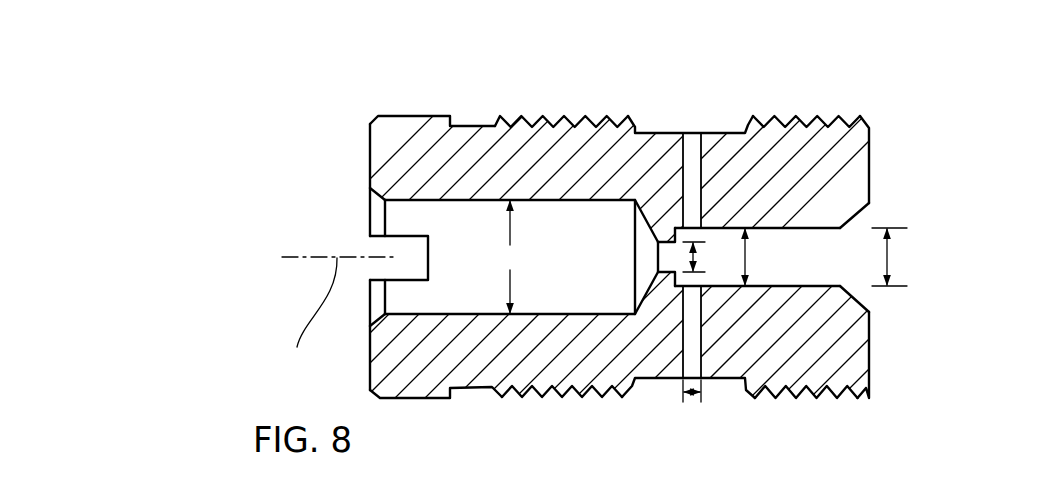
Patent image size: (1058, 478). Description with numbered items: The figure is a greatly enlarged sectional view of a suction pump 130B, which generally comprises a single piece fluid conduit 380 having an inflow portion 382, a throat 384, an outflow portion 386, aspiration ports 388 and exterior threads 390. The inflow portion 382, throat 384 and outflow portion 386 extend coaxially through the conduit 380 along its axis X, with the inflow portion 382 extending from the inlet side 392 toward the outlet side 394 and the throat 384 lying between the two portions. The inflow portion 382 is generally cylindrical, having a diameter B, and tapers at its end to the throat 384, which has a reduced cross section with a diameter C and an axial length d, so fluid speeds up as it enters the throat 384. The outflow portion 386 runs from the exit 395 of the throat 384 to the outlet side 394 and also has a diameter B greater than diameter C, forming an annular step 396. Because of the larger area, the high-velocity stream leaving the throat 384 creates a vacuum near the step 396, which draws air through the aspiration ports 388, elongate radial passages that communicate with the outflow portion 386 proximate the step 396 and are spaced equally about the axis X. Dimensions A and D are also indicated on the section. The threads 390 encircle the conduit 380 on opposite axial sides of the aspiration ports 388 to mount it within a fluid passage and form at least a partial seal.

The suction pump 130B is at (243, 178).
The single piece fluid conduit 380 is at (364, 160).
The inflow portion 382 is at (405, 200).
The throat 384 is at (662, 240).
The outflow portion 386 is at (797, 248).
The aspiration ports 388 is at (699, 168).
The exterior threads 390 is at (538, 117).
The inlet side 392 is at (277, 291).
The outlet side 394 is at (889, 225).
The exit 395 is at (665, 246).
The annular step 396 is at (654, 280).
The axis X is at (313, 318).
The dimension A is at (890, 257).
The diameter B is at (748, 258).
The diameter C is at (697, 254).
The dimension D is at (509, 257).
The axial length d is at (672, 393).